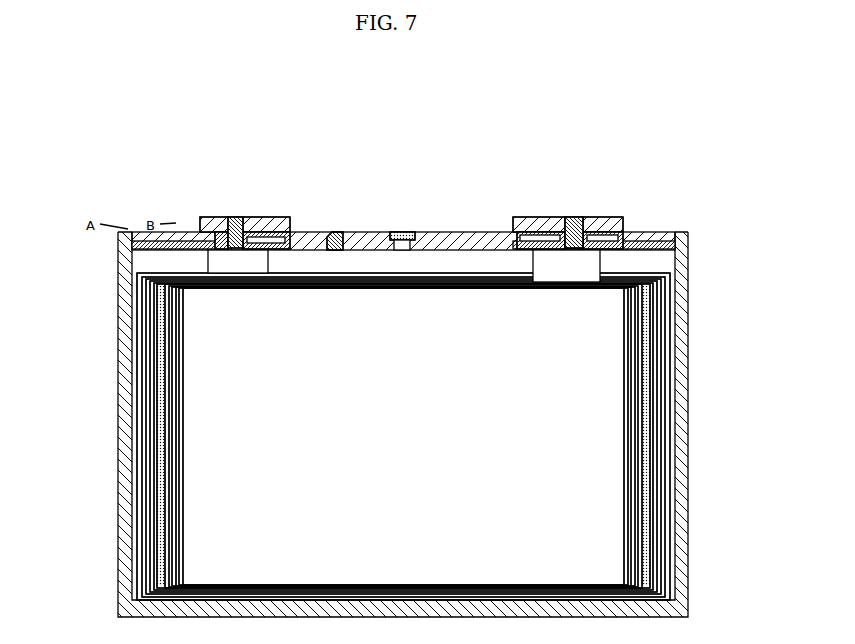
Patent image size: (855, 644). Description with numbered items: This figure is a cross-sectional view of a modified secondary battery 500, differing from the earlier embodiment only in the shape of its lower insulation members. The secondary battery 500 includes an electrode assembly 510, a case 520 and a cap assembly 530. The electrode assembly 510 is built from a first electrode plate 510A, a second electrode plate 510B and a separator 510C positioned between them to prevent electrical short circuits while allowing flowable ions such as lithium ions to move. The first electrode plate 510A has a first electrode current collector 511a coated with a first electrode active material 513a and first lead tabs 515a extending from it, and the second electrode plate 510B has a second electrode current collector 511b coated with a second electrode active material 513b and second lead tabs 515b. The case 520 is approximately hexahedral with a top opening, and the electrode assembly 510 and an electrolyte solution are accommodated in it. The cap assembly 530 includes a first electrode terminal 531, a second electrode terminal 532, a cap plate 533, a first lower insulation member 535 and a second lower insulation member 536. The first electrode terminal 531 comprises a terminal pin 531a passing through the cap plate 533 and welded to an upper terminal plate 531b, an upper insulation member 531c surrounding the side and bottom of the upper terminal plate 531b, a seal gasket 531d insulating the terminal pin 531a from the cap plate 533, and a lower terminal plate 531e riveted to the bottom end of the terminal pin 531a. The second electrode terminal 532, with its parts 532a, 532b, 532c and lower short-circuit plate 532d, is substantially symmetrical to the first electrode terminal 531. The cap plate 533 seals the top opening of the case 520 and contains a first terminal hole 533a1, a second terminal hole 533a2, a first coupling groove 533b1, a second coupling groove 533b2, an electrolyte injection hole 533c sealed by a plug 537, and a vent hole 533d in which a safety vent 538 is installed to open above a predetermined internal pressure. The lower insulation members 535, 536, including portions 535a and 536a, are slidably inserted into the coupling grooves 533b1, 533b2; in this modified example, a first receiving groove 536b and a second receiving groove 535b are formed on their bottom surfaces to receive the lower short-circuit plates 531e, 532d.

The secondary battery 500 is at (58, 170).
The electrode assembly 510 is at (692, 468).
The first electrode plate 510A is at (752, 272).
The second electrode plate 510B is at (58, 272).
The separator 510C is at (162, 428).
The first electrode current collector 511a is at (625, 330).
The second electrode current collector 511b is at (150, 330).
The first electrode active material 513a is at (607, 305).
The second electrode active material 513b is at (170, 305).
The first lead tabs 515a is at (580, 280).
The second lead tabs 515b is at (188, 280).
The case 520 is at (688, 400).
The cap assembly 530 is at (545, 148).
The first electrode terminal 531 is at (690, 170).
The terminal pin 531a is at (574, 217).
The upper terminal plate 531b is at (598, 226).
The upper insulation member 531c is at (612, 224).
The seal gasket 531d is at (622, 244).
The lower terminal plate 531e is at (626, 222).
The second electrode terminal 532 is at (320, 170).
The rivet terminal 532a is at (233, 217).
The terminal plate 532b is at (254, 225).
The terminal plate 532c is at (282, 222).
The second lower short-circuit plate 532d is at (292, 240).
The cap plate 533 is at (477, 232).
The first terminal hole 533a1 is at (562, 218).
The second terminal hole 533a2 is at (226, 217).
The first coupling groove 533b1 is at (682, 233).
The second coupling groove 533b2 is at (136, 232).
The electrolyte injection hole 533c is at (337, 250).
The vent hole 533d is at (408, 250).
The first lower insulation member 535 is at (672, 238).
The upper insulating member 535a is at (541, 240).
The second receiving groove 535b is at (600, 252).
The second lower insulation member 536 is at (208, 260).
The upper insulating member 536a is at (212, 241).
The first receiving groove 536b is at (257, 253).
The plug 537 is at (337, 232).
The safety vent 538 is at (404, 232).